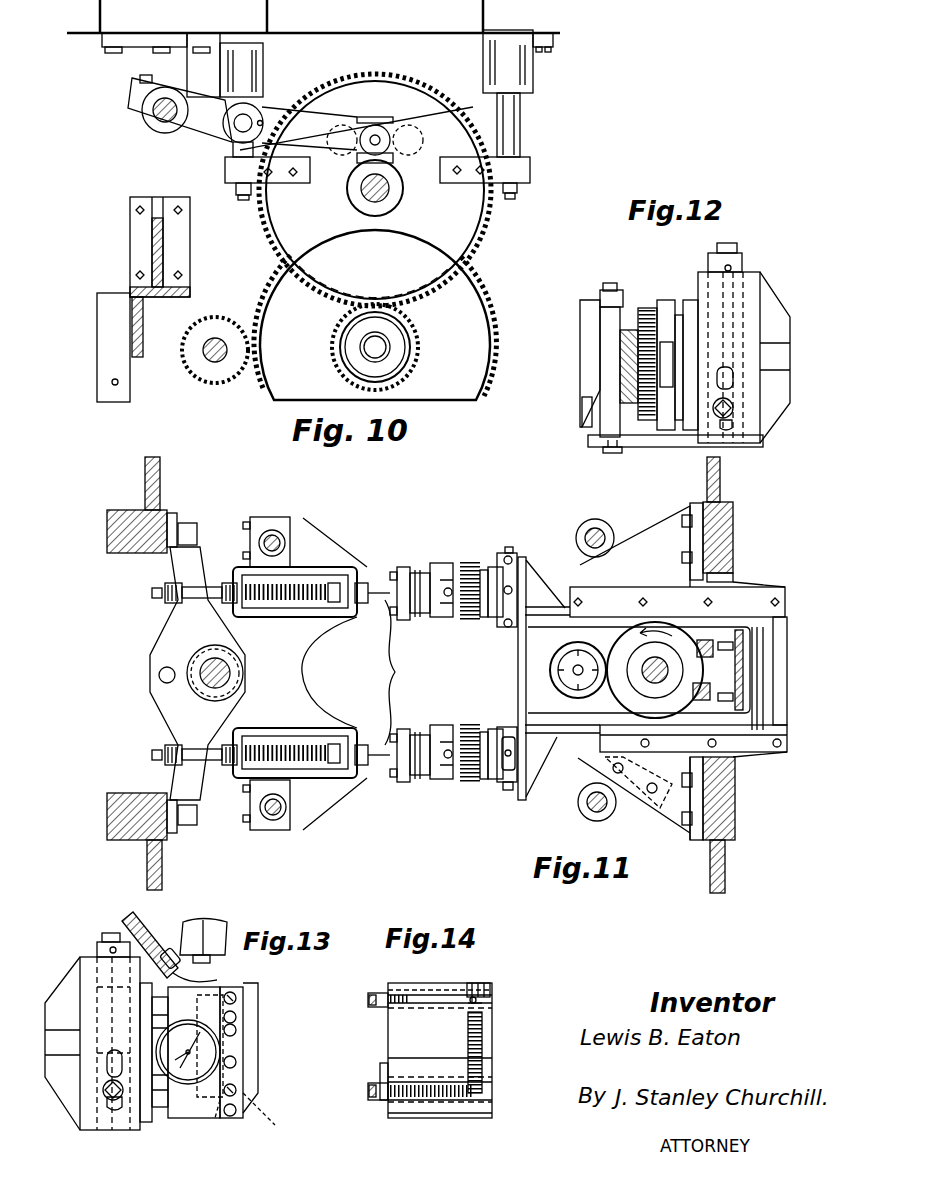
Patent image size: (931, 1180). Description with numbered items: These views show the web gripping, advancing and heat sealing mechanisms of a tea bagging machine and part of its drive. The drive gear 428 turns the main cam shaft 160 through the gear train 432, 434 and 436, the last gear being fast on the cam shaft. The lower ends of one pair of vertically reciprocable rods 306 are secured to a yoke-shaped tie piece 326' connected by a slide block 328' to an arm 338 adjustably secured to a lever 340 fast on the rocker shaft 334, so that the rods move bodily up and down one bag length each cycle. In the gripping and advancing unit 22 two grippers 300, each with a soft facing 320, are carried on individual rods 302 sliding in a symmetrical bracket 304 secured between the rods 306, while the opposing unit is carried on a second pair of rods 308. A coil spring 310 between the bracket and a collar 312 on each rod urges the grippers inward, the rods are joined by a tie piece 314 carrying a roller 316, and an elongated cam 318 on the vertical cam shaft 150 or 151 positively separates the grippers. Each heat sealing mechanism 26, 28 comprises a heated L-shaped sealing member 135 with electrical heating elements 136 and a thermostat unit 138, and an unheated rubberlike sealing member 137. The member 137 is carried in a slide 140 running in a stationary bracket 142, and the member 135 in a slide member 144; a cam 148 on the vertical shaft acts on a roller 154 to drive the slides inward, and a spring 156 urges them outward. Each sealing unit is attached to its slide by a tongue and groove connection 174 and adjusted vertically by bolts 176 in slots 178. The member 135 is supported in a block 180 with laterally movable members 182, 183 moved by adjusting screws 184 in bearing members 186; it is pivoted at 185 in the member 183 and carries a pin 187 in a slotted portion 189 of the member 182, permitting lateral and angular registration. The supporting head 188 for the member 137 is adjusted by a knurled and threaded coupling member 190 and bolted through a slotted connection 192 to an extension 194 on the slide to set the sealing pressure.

In FIG. 11, the gripping and advancing unit 22 is at (235, 490).
In FIG. 13, the heat sealing mechanism 26 is at (222, 908).
In FIG. 12, the heat sealing mechanism 28 is at (662, 268).
In FIG. 11, the heat sealing mechanism 28 is at (522, 545).
In FIG. 13, the heated sealing member 135 is at (250, 1043).
In FIG. 14, the heated sealing member 135 is at (468, 1035).
In FIG. 13, the electrical heating elements 136 is at (230, 1007).
In FIG. 12, the unheated sealing member 137 is at (572, 377).
In FIG. 11, the unheated sealing member 137 is at (446, 553).
In FIG. 13, the thermostat unit 138 is at (212, 1007).
In FIG. 12, the slide 140 is at (764, 300).
In FIG. 11, the slide 140 is at (527, 590).
In FIG. 11, the stationary bracket 142 is at (668, 527).
In FIG. 13, the slide member 144 is at (78, 985).
In FIG. 11, the cam 148 is at (700, 665).
In FIG. 11, the vertical cam shaft 150 is at (660, 665).
In FIG. 11, the vertical cam shaft 151 is at (205, 683).
In FIG. 11, the roller 154 is at (580, 655).
In FIG. 11, the spring 156 is at (712, 683).
In FIG. 10, the main cam shaft 160 is at (392, 196).
In FIG. 12, the tongue and groove connection 174 is at (710, 282).
In FIG. 11, the tongue and groove connection 174 is at (505, 790).
In FIG. 13, the tongue and groove connection 174 is at (92, 950).
In FIG. 12, the bolt 176 is at (735, 408).
In FIG. 13, the bolt 176 is at (105, 1095).
In FIG. 12, the slot 178 is at (728, 420).
In FIG. 13, the slot 178 is at (115, 1112).
In FIG. 14, the block 180 is at (455, 985).
In FIG. 13, the laterally movable member 182 is at (240, 978).
In FIG. 14, the laterally movable member 182 is at (435, 995).
In FIG. 13, the laterally movable member 183 is at (240, 1100).
In FIG. 14, the laterally movable member 183 is at (440, 1105).
In FIG. 13, the adjusting screw 184 is at (236, 997).
In FIG. 14, the adjusting screw 184 is at (370, 1090).
In FIG. 13, the pivot 185 is at (220, 1112).
In FIG. 14, the pivot 185 is at (477, 1090).
In FIG. 13, the bearing member 186 is at (237, 1018).
In FIG. 14, the bearing member 186 is at (385, 993).
In FIG. 14, the pin 187 is at (478, 1000).
In FIG. 12, the supporting head 188 is at (605, 316).
In FIG. 14, the slotted portion 189 is at (480, 1003).
In FIG. 12, the knurled and threaded coupling member 190 is at (640, 308).
In FIG. 11, the knurled and threaded coupling member 190 is at (470, 560).
In FIG. 12, the slotted connection 192 is at (626, 462).
In FIG. 12, the extension 194 is at (661, 448).
In FIG. 11, the gripper 300 is at (423, 567).
In FIG. 11, the rod 302 is at (392, 665).
In FIG. 11, the symmetrical bracket 304 is at (310, 693).
In FIG. 10, the vertically reciprocable rod 306 is at (515, 133).
In FIG. 11, the vertically reciprocable rod 306 is at (275, 540).
In FIG. 11, the vertically reciprocal rod 308 is at (595, 530).
In FIG. 11, the coil spring 310 is at (315, 590).
In FIG. 11, the collar 312 is at (335, 592).
In FIG. 11, the tie piece 314 is at (162, 640).
In FIG. 11, the roller 316 is at (158, 675).
In FIG. 11, the elongated cam 318 is at (200, 712).
In FIG. 11, the soft facing 320 is at (452, 700).
In FIG. 10, the yoke-shaped tie piece 326' is at (537, 85).
In FIG. 10, the slide block 328' is at (401, 99).
In FIG. 10, the rocker shaft 334 is at (150, 110).
In FIG. 10, the arm 338 is at (290, 115).
In FIG. 10, the lever 340 is at (203, 97).
In FIG. 10, the gear 428 is at (190, 372).
In FIG. 10, the gear 432 is at (272, 272).
In FIG. 10, the gear 434 is at (420, 336).
In FIG. 10, the gear 436 is at (492, 235).